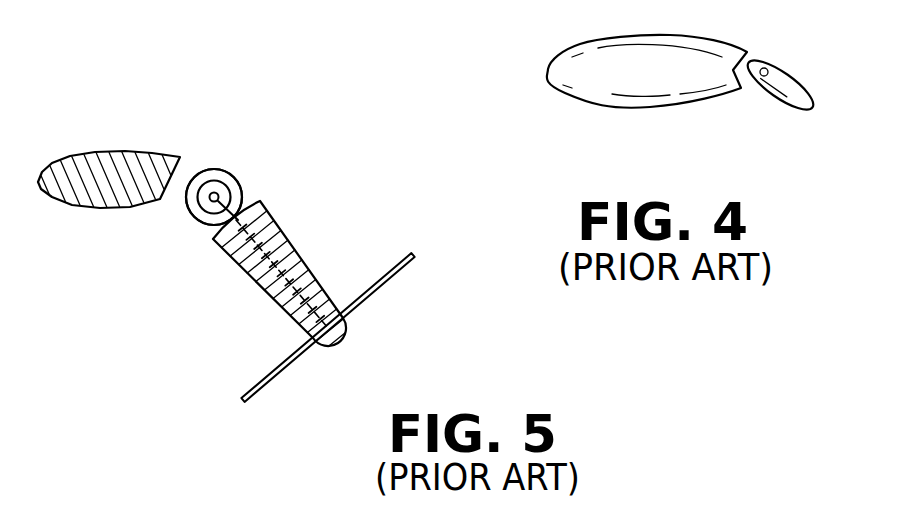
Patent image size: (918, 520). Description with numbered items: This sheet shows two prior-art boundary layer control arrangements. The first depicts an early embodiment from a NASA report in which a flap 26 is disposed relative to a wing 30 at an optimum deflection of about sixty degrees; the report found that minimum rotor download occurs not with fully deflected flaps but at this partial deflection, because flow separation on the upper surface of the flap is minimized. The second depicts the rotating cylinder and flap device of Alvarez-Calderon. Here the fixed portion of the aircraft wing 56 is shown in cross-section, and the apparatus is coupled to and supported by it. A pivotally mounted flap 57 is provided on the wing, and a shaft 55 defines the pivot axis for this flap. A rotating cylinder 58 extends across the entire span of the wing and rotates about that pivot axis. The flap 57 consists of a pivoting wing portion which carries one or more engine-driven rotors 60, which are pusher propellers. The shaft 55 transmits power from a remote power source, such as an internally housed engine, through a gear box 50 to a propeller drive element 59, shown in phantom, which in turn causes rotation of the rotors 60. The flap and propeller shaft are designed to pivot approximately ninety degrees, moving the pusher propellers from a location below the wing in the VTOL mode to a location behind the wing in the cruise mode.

In FIG. 4, the wing 30 is at (660, 78).
In FIG. 4, the flap 26 is at (782, 96).
In FIG. 5, the gear box 50 is at (199, 218).
In FIG. 5, the shaft 55 is at (223, 192).
In FIG. 5, the fixed portion of the aircraft wing 56 is at (93, 208).
In FIG. 5, the flap 57 is at (270, 296).
In FIG. 5, the rotating cylinder 58 is at (237, 178).
In FIG. 5, the propeller drive element 59 is at (287, 243).
In FIG. 5, the engine-driven rotors 60 is at (384, 286).